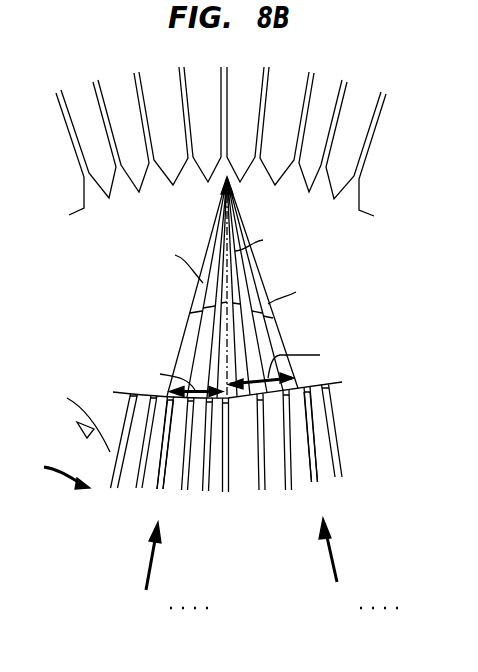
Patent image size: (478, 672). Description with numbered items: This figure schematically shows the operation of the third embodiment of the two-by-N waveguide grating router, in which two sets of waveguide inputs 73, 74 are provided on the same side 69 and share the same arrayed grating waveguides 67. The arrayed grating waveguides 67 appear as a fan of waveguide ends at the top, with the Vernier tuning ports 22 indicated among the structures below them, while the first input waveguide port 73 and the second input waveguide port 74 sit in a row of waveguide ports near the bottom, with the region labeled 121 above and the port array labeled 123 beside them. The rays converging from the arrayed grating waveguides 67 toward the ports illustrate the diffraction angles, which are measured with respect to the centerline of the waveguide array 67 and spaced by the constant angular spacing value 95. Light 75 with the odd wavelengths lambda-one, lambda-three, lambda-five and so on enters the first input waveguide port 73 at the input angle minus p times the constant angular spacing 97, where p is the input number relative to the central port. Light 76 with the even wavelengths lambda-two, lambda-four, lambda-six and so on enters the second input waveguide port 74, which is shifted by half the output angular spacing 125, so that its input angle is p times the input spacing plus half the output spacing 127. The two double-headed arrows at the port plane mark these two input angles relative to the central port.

The Vernier tuning ports 22 is at (81, 413).
The arrayed grating waveguides 67 is at (384, 108).
The side of the arrayed grating waveguides 69 is at (56, 470).
The first input waveguide port 73 is at (160, 482).
The second input waveguide port 74 is at (319, 479).
The light with odd wavelengths 75 is at (153, 563).
The light with even wavelengths 76 is at (333, 560).
The constant angular spacing value 95 is at (130, 245).
The input angle -pΔθi 97 is at (176, 350).
The input side of free propagation region 121 is at (477, 345).
The output waveguide array 123 is at (472, 534).
The shift Δθo/2 125 is at (330, 238).
The input angle pΔθi+Δθo/2 127 is at (388, 370).